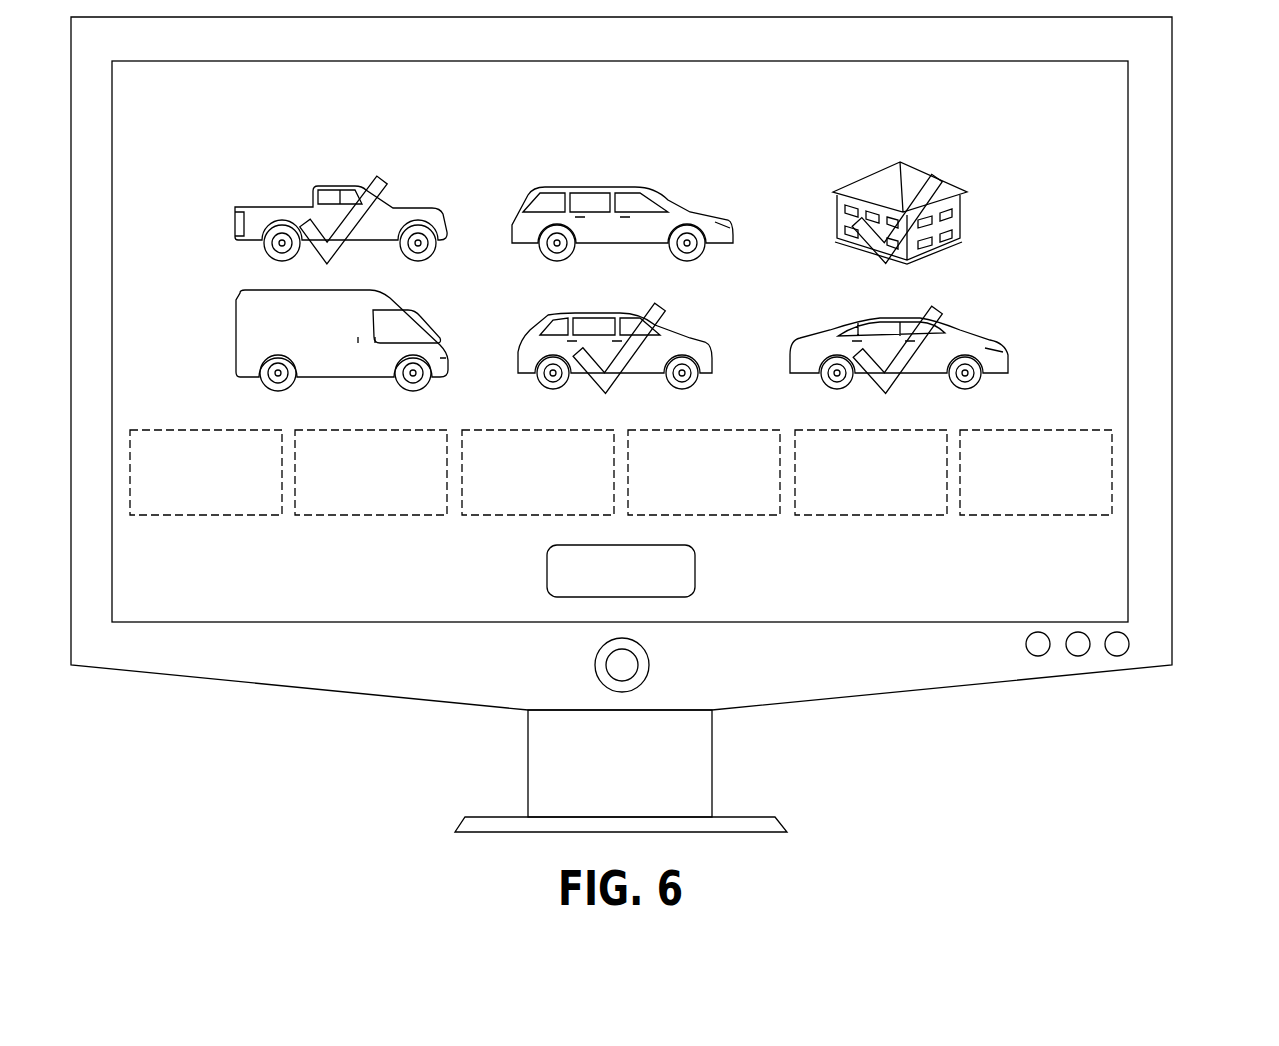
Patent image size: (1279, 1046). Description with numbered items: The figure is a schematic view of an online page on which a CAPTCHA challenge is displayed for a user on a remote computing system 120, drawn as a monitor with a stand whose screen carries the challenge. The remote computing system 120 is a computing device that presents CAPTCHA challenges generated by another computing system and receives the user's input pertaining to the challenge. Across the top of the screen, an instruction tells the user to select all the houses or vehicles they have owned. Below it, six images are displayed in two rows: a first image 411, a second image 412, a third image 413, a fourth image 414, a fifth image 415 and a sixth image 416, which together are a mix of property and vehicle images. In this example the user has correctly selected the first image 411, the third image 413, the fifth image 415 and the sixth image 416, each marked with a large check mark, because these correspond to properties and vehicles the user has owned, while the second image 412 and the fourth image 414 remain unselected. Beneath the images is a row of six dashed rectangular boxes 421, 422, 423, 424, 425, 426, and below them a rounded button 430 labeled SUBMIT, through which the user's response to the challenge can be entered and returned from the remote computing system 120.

The remote computing system 120 is at (1172, 122).
The first image 411 is at (232, 220).
The second image 412 is at (683, 208).
The third image 413 is at (960, 218).
The fourth image 414 is at (235, 337).
The fifth image 415 is at (528, 333).
The sixth image 416 is at (965, 337).
The input box 421 is at (200, 517).
The input box 422 is at (365, 517).
The input box 423 is at (510, 517).
The input box 424 is at (733, 428).
The input box 425 is at (875, 517).
The input box 426 is at (1030, 517).
The submit button 430 is at (697, 567).